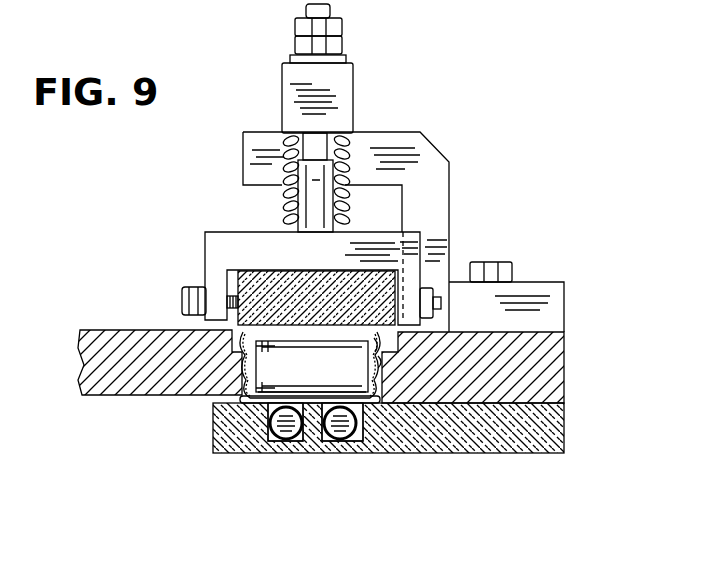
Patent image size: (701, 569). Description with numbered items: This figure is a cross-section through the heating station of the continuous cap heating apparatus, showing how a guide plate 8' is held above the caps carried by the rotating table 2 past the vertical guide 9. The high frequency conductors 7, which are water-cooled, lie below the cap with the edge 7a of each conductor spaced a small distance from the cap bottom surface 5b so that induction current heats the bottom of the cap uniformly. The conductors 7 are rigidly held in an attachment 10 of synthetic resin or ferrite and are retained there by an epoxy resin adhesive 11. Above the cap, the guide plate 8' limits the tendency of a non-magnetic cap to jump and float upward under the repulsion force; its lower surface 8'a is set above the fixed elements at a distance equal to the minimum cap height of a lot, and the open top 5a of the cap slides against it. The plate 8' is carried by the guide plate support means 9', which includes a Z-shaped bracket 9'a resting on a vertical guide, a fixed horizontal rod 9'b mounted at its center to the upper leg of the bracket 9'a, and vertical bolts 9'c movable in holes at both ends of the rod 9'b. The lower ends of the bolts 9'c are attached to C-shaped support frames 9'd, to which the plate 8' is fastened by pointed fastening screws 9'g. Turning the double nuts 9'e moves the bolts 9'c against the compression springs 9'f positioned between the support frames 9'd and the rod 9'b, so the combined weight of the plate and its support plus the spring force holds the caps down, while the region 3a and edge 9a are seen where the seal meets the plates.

The rotating table 2 is at (118, 382).
The sealing strip 3a is at (244, 358).
The open top of the cap 5a is at (366, 330).
The bottom surface of the cap 5b is at (362, 455).
The high frequency conductors 7 is at (268, 432).
The edge of the conductor 7a is at (340, 397).
The guide plate 8' is at (280, 279).
The lower surface of the guide plate 8'a is at (312, 278).
The vertical guide 9 is at (499, 367).
The guide plate support means 9' is at (396, 168).
The Z-shaped bracket 9'a is at (403, 232).
The fixed horizontal rod 9'b is at (345, 98).
The vertical bolts 9'c is at (344, 182).
The C-shaped support frames 9'd is at (180, 294).
The double nuts 9'e is at (347, 33).
The compression springs 9'f is at (289, 180).
The pointed fastening screws 9'g is at (466, 290).
The plate edge 9a is at (385, 358).
The attachment 10 is at (307, 457).
The epoxy resin adhesive 11 is at (268, 452).